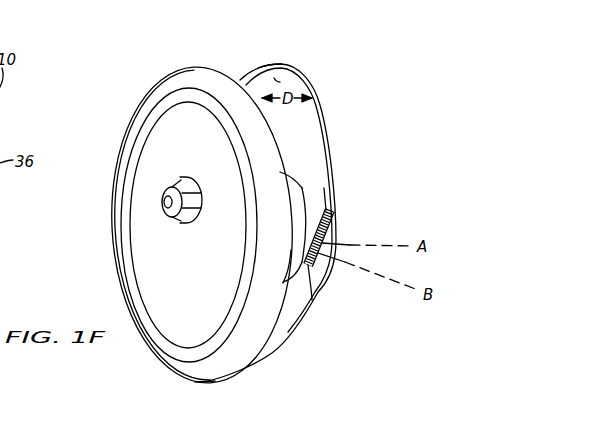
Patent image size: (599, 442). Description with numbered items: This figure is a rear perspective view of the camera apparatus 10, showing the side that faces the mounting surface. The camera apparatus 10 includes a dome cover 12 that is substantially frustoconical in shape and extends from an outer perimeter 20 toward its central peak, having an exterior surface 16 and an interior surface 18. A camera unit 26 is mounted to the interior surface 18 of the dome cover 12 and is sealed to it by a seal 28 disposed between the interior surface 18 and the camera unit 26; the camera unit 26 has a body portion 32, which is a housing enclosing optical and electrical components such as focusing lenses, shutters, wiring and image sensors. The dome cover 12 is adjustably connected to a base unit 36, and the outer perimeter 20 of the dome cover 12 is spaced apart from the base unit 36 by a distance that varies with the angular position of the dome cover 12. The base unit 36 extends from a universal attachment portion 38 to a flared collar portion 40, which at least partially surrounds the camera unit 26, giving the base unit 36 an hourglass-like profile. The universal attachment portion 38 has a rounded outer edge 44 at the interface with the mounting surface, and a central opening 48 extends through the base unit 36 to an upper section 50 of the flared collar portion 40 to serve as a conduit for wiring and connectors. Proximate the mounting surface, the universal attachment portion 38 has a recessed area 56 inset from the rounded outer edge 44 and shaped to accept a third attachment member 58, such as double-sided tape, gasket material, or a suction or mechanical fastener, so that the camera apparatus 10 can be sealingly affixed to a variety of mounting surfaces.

The camera apparatus 10 is at (124, 116).
The dome cover 12 is at (335, 137).
The exterior surface 16 is at (320, 92).
The interior surface 18 is at (275, 80).
The outer perimeter 20 is at (270, 68).
The camera unit 26 is at (283, 280).
The seal 28 is at (330, 219).
The body portion 32 is at (322, 268).
The base unit 36 is at (213, 82).
The universal attachment portion 38 is at (210, 322).
The flared collar portion 40 is at (300, 187).
The rounded outer edge 44 is at (212, 378).
The central opening 48 is at (188, 223).
The upper section 50 is at (325, 210).
The recessed area 56 is at (141, 168).
The third attachment member 58 is at (163, 211).